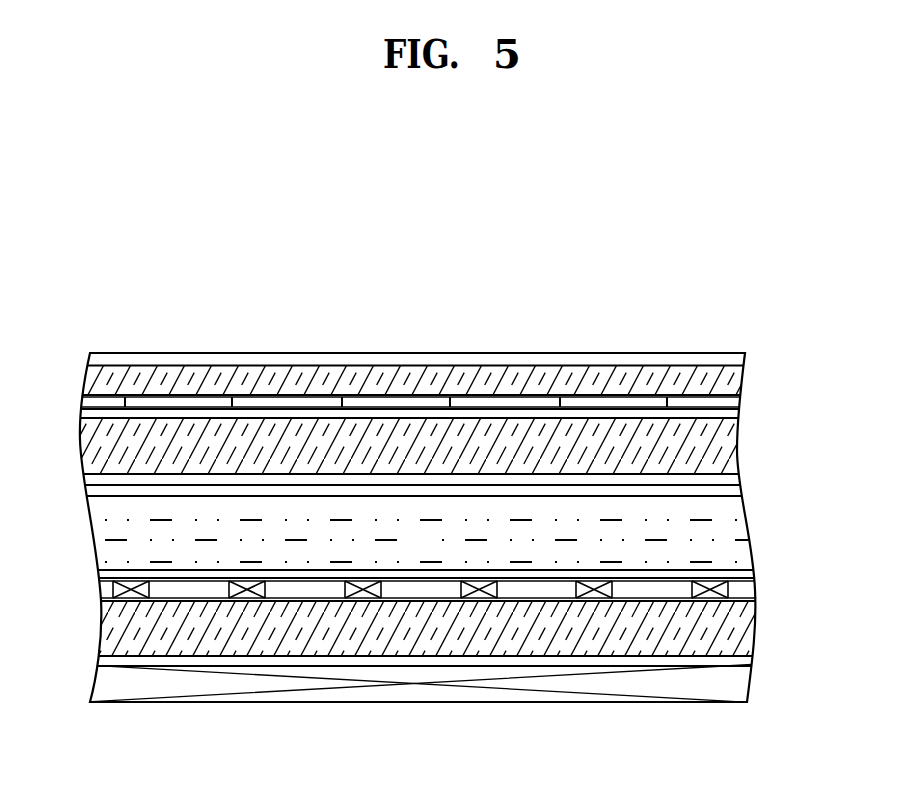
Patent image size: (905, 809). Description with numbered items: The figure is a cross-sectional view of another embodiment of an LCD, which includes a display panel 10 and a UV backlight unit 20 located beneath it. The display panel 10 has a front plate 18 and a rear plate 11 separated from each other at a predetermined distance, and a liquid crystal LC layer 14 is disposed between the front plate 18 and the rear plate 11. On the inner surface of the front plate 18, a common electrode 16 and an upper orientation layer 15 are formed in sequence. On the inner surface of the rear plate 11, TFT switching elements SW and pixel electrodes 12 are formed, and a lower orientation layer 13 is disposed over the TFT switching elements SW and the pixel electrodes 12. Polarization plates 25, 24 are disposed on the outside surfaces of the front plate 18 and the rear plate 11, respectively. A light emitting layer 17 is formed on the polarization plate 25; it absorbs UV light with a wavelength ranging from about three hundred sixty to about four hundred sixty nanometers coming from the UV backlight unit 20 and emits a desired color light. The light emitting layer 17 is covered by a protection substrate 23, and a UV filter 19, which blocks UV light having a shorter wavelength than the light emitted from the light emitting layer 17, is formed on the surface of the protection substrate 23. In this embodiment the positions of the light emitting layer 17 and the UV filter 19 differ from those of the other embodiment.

The display panel 10 is at (815, 305).
The rear plate 11 is at (743, 640).
The pixel electrodes 12 is at (667, 592).
The lower orientation layer 13 is at (742, 577).
The liquid crystal layer 14 is at (732, 541).
The upper orientation layer 15 is at (725, 492).
The common electrode 16 is at (725, 482).
The light emitting layer 17 is at (728, 401).
The front plate 18 is at (728, 460).
The UV filter 19 is at (745, 358).
The UV backlight unit 20 is at (757, 691).
The protection substrate 23 is at (722, 378).
The polarization plate 24 is at (743, 663).
The polarization plate 25 is at (728, 414).
The TFT switching elements SW is at (113, 590).
The liquid crystal LC is at (418, 535).